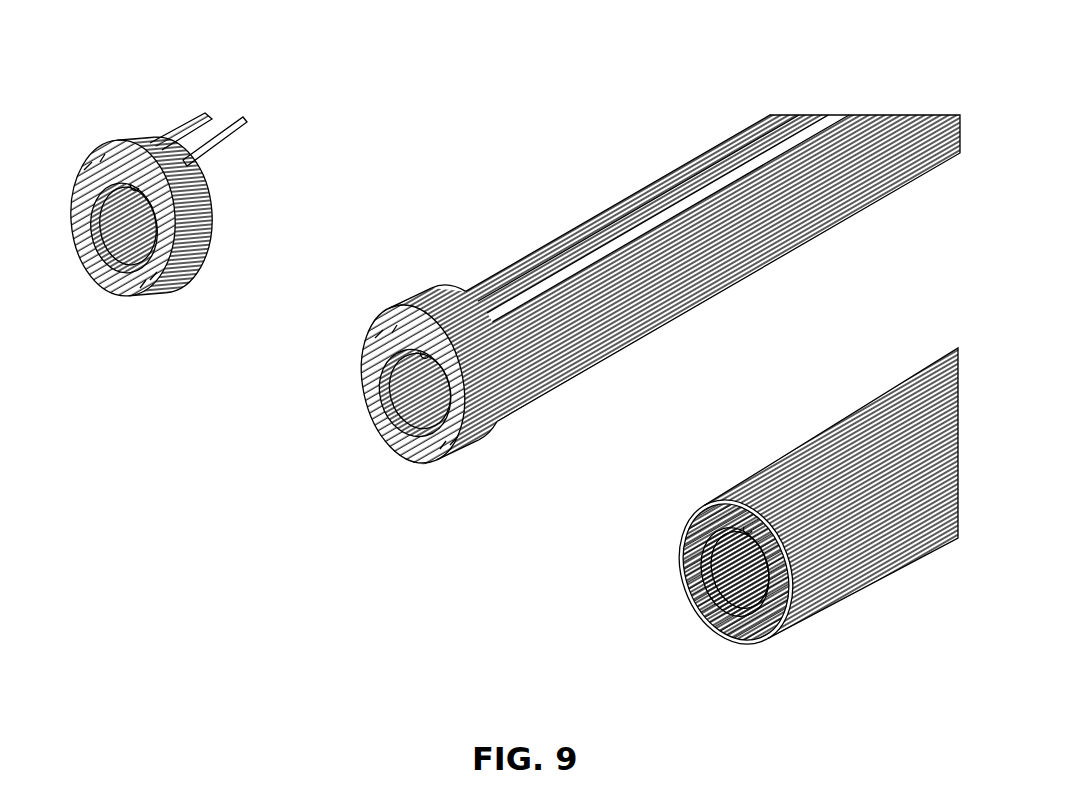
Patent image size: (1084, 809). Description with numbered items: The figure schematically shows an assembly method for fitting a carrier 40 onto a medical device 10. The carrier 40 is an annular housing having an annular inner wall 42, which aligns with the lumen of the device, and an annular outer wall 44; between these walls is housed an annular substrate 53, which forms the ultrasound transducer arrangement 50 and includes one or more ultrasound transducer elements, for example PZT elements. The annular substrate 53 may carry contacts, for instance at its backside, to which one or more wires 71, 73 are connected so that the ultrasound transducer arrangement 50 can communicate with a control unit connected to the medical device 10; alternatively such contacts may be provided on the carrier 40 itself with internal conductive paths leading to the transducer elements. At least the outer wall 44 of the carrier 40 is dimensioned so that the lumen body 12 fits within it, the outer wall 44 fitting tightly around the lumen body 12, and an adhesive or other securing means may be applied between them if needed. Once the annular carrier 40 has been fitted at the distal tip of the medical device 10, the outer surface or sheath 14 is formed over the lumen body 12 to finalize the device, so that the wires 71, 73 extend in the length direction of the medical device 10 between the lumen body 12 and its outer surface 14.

The medical device 10 is at (780, 459).
The lumen body 12 is at (605, 234).
The outer surface or sheath 14 is at (820, 443).
The carrier 40 is at (271, 295).
The annular inner wall 42 is at (123, 247).
The annular outer wall 44 is at (197, 236).
The ultrasound transducer arrangement 50 is at (700, 561).
The annular substrate 53 is at (138, 283).
The wire 71 is at (244, 118).
The wire 73 is at (180, 127).